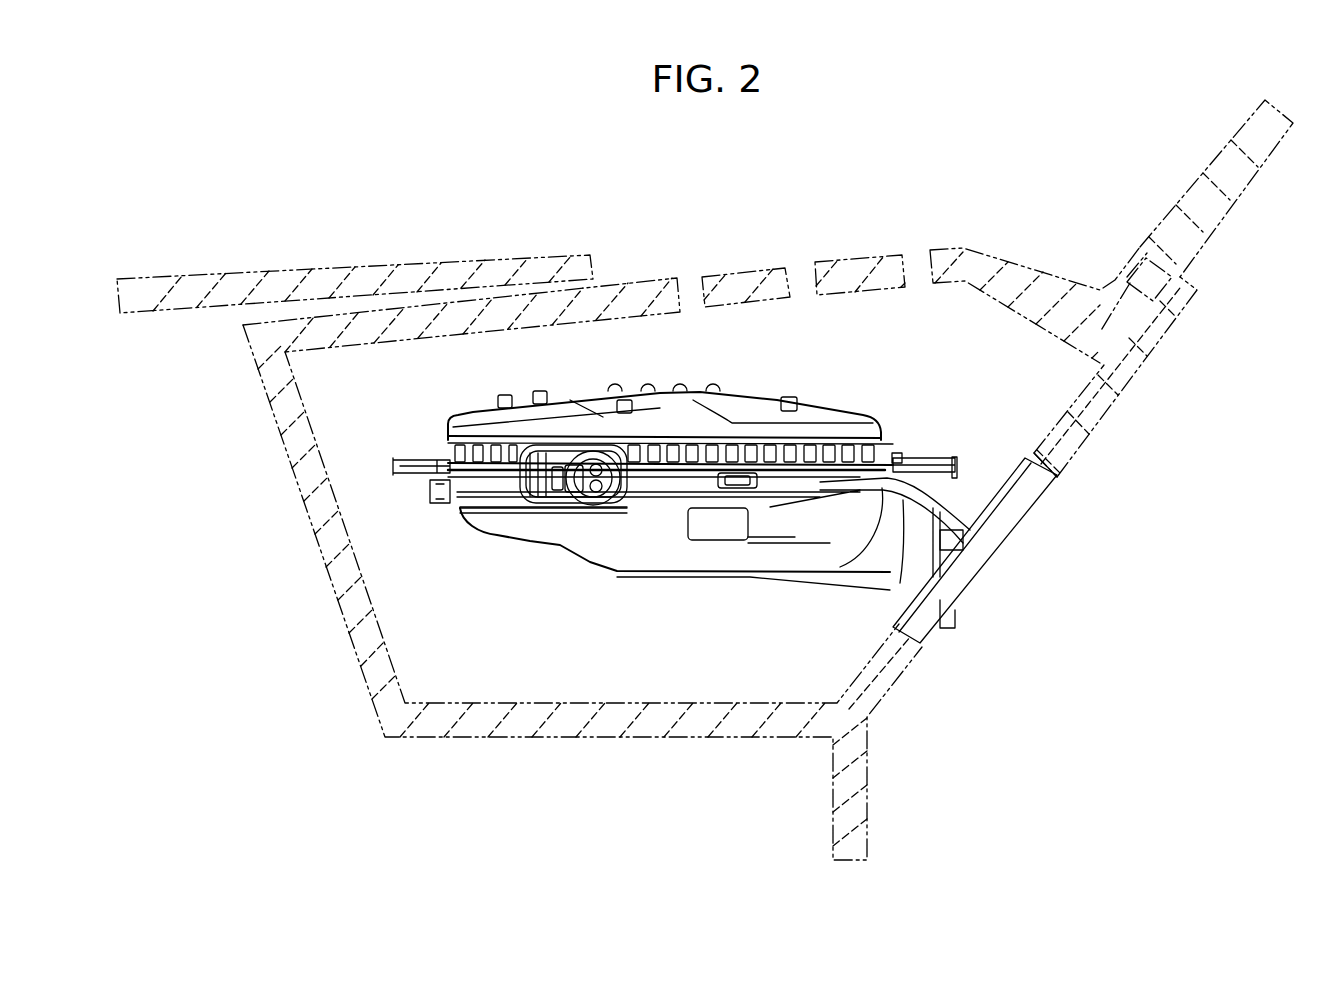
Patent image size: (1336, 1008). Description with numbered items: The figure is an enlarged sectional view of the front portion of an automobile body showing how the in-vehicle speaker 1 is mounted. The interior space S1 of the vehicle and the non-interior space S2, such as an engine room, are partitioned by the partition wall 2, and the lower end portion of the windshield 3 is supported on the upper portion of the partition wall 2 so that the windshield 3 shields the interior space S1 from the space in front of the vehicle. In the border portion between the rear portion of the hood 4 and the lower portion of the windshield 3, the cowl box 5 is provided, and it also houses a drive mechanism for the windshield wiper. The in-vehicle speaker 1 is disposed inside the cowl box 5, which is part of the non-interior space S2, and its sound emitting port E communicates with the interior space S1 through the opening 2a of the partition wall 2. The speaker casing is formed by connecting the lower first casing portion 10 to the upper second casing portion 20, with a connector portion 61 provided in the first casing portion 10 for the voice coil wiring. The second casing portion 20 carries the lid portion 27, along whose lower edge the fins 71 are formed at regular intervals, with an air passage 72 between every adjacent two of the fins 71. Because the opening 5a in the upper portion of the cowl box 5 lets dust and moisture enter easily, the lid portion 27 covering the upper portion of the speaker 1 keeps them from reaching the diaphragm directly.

The in-vehicle speaker 1 is at (568, 586).
The partition wall 2 is at (1092, 418).
The opening 2a is at (1057, 490).
The windshield 3 is at (1192, 198).
The hood 4 is at (220, 278).
The cowl box 5 is at (348, 466).
The opening 5a is at (803, 270).
The first casing portion 10 is at (746, 576).
The second casing portion 20 is at (842, 402).
The lid portion 27 is at (808, 410).
The connector portion 61 is at (590, 484).
The fins 71 is at (697, 462).
The air passage 72 is at (812, 462).
The sound emitting port E is at (1017, 527).
The interior space S1 is at (975, 753).
The non-interior space S2 is at (977, 332).